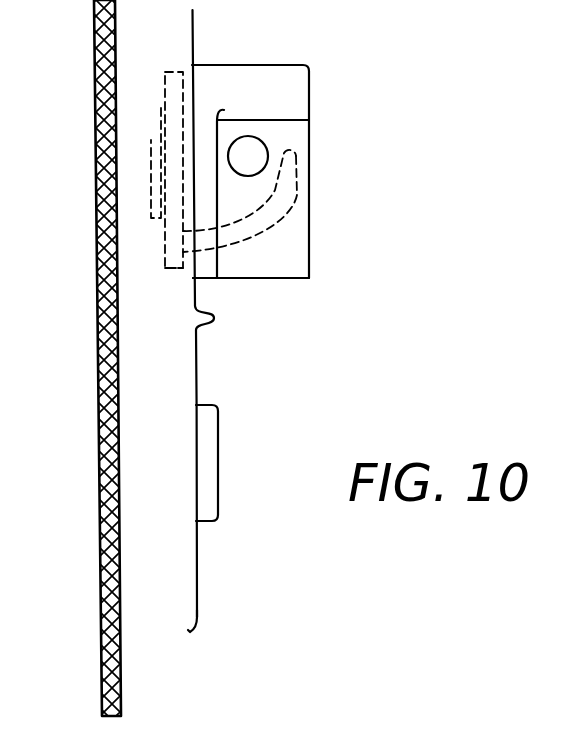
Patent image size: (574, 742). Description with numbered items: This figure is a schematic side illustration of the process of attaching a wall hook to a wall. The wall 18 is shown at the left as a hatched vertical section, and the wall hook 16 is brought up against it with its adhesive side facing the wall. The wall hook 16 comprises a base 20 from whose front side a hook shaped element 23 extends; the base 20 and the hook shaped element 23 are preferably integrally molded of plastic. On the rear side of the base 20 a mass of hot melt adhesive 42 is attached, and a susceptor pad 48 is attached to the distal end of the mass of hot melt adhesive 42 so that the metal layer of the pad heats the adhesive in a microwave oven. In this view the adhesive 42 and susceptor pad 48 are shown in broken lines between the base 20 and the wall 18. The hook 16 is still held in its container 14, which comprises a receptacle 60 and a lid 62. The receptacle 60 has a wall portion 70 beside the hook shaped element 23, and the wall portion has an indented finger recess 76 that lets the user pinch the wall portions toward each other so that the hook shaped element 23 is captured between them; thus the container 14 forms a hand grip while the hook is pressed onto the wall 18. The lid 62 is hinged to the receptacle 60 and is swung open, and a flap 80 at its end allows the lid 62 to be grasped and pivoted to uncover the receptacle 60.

The container 14 is at (322, 235).
The wall hook 16 is at (193, 62).
The wall 18 is at (100, 485).
The base 20 is at (178, 262).
The hook shaped element 23 is at (290, 180).
The mass of hot melt adhesive 42 is at (153, 143).
The susceptor pad 48 is at (152, 198).
The receptacle 60 is at (277, 278).
The lid 62 is at (197, 375).
The wall portion 70 is at (298, 203).
The finger recess 76 is at (257, 138).
The flap 80 is at (197, 622).